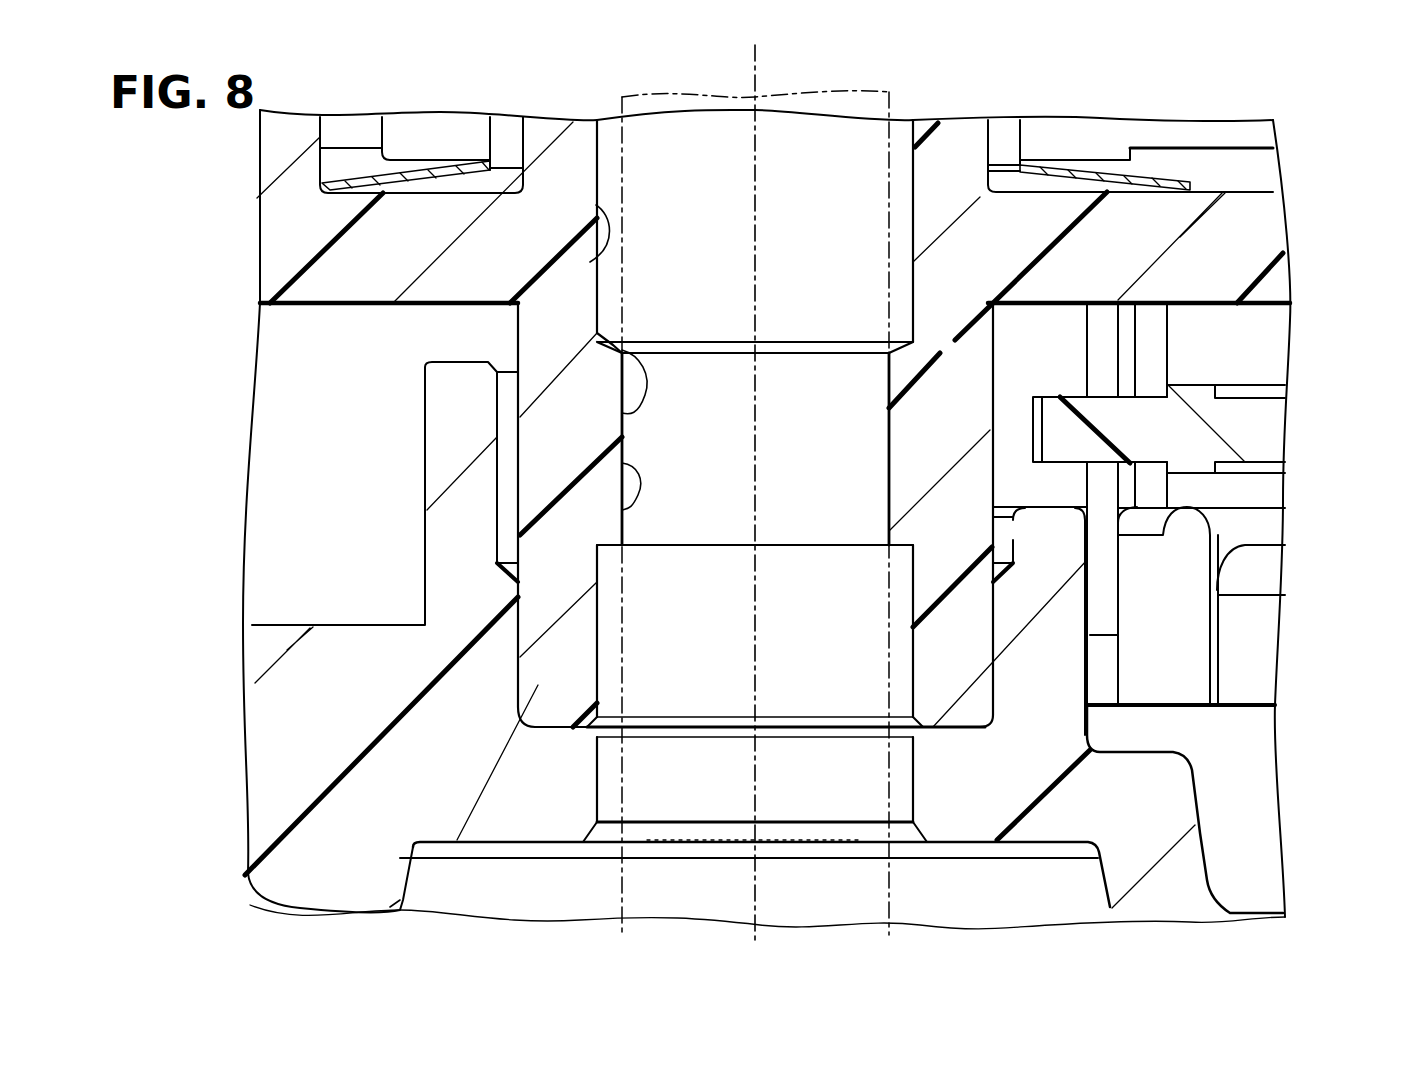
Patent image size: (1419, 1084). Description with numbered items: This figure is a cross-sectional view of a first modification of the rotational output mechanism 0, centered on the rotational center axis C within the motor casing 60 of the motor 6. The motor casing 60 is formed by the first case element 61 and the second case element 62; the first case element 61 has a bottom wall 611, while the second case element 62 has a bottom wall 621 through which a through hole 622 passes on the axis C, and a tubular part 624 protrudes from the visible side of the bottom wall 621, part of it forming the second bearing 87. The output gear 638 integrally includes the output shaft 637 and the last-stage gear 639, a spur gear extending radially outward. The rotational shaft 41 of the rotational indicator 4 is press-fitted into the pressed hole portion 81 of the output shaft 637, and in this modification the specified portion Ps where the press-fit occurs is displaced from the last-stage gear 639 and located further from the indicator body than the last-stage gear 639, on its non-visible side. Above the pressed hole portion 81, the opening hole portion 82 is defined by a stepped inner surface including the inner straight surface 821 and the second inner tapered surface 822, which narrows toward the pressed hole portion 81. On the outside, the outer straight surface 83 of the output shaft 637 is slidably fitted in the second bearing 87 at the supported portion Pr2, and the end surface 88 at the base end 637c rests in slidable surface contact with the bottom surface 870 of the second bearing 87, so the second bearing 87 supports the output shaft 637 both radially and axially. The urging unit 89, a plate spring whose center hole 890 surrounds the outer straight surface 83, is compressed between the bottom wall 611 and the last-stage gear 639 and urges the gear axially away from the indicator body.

The motor housing 6 is at (352, 103).
The motor casing 60 is at (857, 487).
The first case element 61 is at (462, 132).
The second case element 62 is at (1195, 788).
The output gear 638 is at (596, 122).
The rotational indicator 4 is at (782, 490).
The rotational shaft 41 is at (893, 102).
The rotational center axis C is at (757, 73).
The center hole 890 is at (1010, 168).
The bottom wall 611 is at (1060, 145).
The urging unit 89 is at (1090, 165).
The rotational output mechanism 0 is at (1180, 172).
The last-stage gear 639 is at (1243, 249).
The opening hole portion 82 is at (913, 340).
The inner straight surface 821 is at (590, 262).
The output shaft 637 is at (518, 333).
The base end 637c is at (538, 685).
The second inner tapered surface 822 is at (622, 423).
The pressed hole portion 81 is at (622, 507).
The specified portion Ps is at (893, 423).
The supported portion Pr2 is at (995, 593).
The outer straight surface 83 is at (993, 620).
The tubular part 624 is at (1047, 630).
The second bearing 87 is at (992, 710).
The end surface 88 is at (553, 718).
The bottom surface 870 is at (558, 727).
The through hole 622 is at (913, 780).
The bottom wall 621 is at (1090, 842).